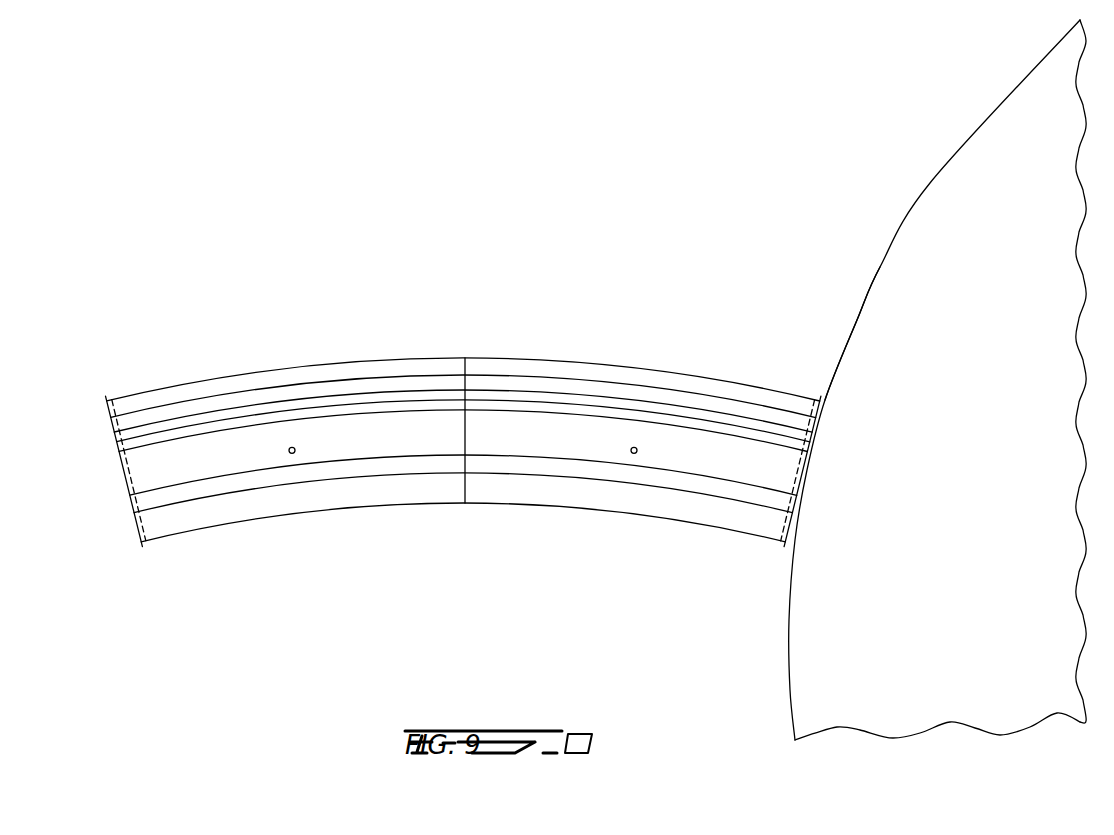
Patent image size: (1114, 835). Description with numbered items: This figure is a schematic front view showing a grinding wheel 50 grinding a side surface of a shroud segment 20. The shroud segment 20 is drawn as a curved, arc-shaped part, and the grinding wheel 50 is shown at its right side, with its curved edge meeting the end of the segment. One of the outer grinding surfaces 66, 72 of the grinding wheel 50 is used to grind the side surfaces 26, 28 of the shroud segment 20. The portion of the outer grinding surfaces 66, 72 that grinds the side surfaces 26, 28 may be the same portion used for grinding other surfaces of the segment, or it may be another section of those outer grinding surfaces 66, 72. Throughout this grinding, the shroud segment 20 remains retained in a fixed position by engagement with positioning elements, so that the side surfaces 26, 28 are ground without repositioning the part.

The shroud segment 20 is at (467, 390).
The vehicle body panel 50 is at (909, 380).
The outer grinding surface 66 is at (806, 307).
The outer grinding surface 72 is at (853, 322).
The side surface 26 is at (742, 502).
The side surface 28 is at (803, 490).